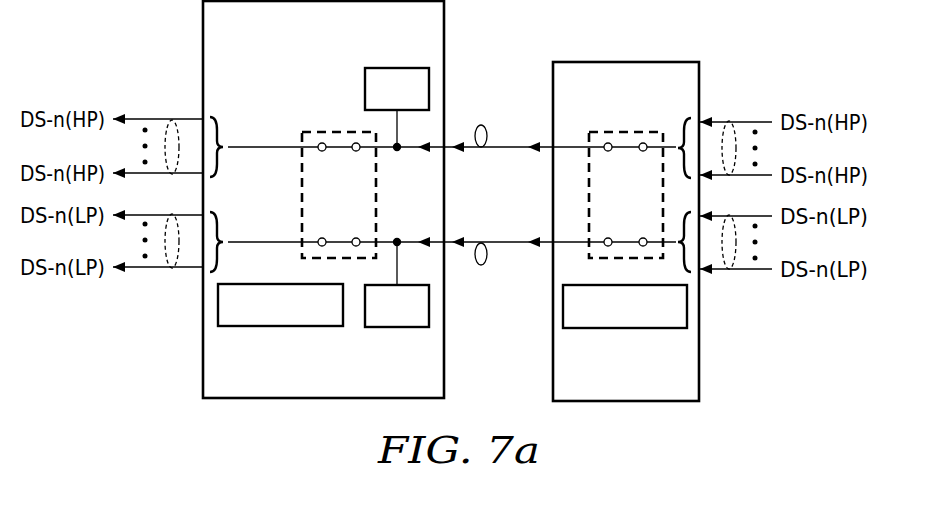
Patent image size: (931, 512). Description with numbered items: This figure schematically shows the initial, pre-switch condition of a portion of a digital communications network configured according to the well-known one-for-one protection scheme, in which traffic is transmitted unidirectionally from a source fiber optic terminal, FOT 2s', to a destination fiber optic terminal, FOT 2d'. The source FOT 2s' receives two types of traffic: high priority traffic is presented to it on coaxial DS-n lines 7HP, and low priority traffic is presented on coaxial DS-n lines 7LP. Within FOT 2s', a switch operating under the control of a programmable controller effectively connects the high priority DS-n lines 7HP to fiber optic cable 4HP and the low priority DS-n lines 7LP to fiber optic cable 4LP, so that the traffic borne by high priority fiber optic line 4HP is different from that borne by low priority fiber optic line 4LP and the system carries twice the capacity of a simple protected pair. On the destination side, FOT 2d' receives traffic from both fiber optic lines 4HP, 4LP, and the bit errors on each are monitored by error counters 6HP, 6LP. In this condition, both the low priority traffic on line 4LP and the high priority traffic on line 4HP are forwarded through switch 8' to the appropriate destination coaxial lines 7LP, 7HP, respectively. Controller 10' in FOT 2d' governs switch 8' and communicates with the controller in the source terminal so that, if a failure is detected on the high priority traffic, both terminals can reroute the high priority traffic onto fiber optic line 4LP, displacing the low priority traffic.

The destination FOT 2d' is at (353, 199).
The source FOT 2s' is at (626, 205).
The switch 8' is at (339, 169).
The error counter 6HP is at (397, 68).
The error counter 6LP is at (397, 327).
The high priority fiber optic cable 4HP is at (507, 147).
The low priority fiber optic cable 4LP is at (505, 243).
The programmable controller 10' is at (280, 332).
The high priority coaxial DS-n lines 7HP is at (172, 120).
The low priority coaxial DS-n lines 7LP is at (172, 268).